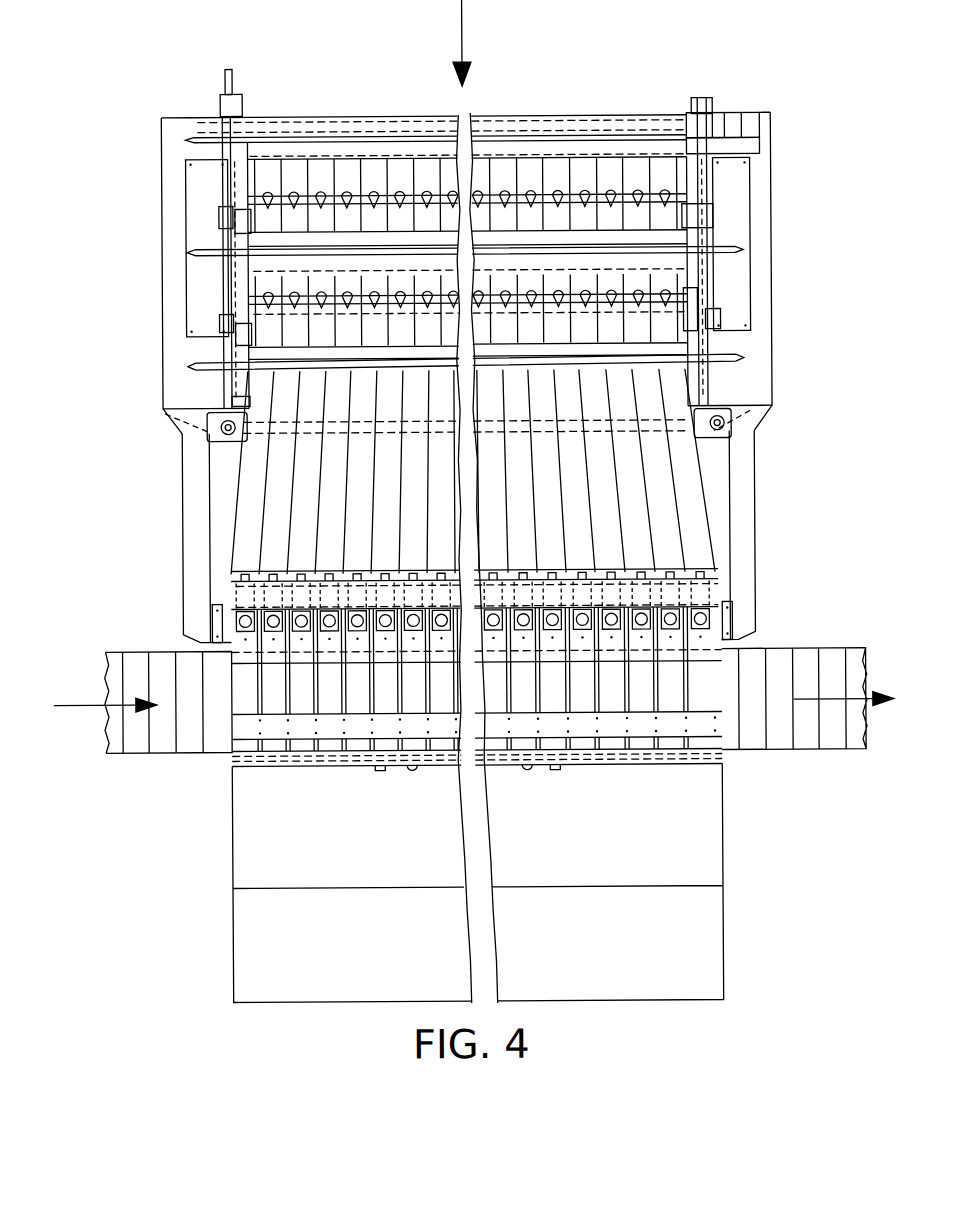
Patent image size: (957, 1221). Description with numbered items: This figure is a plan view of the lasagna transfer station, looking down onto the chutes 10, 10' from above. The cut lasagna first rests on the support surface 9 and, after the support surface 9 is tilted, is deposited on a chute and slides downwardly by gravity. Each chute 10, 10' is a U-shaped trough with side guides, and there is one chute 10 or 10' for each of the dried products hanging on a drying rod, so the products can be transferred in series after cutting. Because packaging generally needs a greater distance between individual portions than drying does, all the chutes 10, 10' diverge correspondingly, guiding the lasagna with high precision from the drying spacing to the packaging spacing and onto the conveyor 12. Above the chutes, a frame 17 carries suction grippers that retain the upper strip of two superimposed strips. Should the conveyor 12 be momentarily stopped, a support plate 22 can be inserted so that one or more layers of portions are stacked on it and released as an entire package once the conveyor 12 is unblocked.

The support surface 9 is at (682, 347).
The chute 10 is at (536, 471).
The chute 10' is at (622, 470).
The conveyor 12 is at (753, 742).
The frame 17 is at (716, 251).
The support plate 22 is at (366, 841).